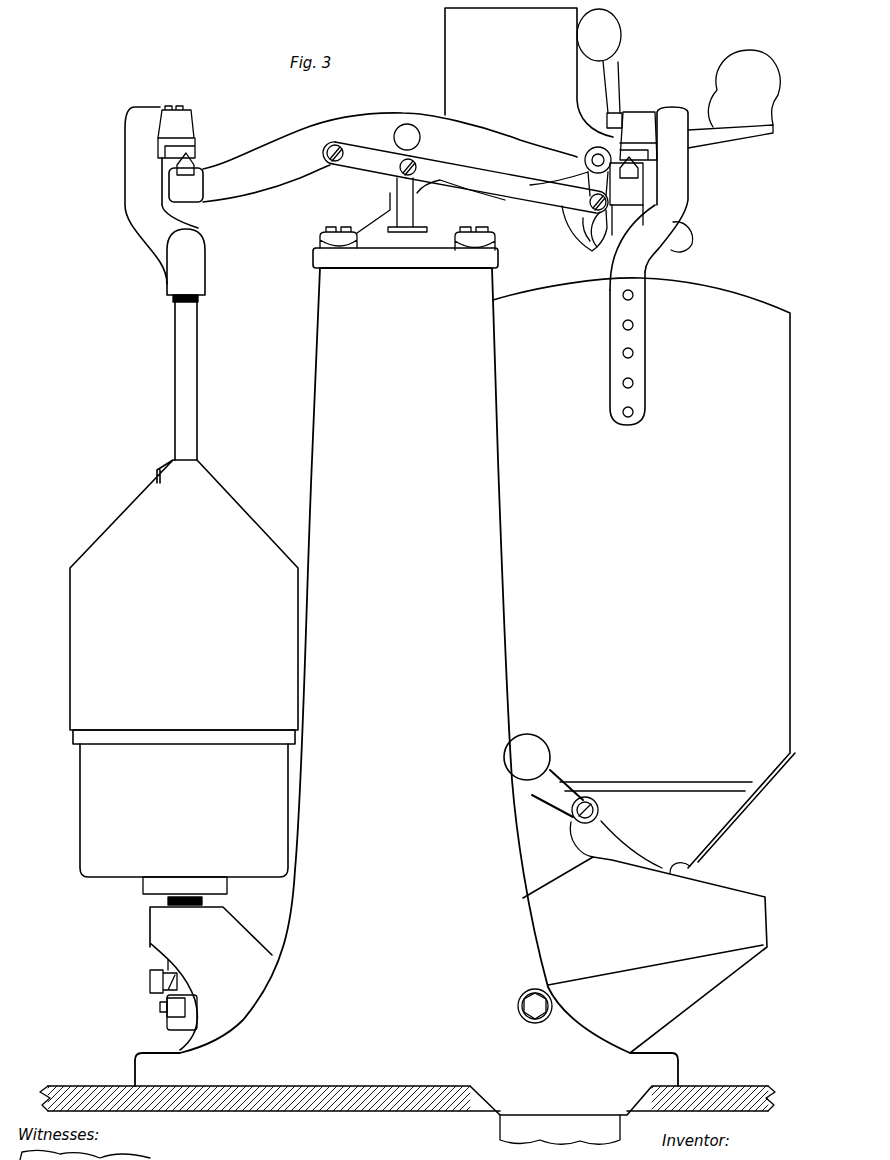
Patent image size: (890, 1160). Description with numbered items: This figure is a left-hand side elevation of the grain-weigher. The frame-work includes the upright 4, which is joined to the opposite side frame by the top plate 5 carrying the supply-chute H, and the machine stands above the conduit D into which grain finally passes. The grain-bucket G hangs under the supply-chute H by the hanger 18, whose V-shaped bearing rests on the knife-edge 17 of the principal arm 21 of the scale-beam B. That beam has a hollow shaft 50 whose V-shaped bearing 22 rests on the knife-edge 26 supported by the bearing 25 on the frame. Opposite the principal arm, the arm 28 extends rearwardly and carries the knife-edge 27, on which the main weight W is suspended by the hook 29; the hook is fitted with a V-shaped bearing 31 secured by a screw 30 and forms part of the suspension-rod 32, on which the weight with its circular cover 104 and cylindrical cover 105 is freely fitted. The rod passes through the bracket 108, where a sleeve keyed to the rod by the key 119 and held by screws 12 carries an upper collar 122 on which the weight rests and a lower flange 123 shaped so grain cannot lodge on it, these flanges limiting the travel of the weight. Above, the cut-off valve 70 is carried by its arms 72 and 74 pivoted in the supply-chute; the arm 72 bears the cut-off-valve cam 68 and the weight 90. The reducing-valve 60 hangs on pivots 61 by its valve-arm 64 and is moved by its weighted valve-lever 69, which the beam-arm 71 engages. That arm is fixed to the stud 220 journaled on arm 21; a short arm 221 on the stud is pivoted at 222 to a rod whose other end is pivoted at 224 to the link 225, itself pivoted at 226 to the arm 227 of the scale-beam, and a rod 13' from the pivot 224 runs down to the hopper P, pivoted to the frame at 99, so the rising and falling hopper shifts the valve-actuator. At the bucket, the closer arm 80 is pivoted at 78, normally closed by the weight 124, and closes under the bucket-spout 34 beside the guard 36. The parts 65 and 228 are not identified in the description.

The upright 4 is at (316, 412).
The top plate 5 is at (322, 256).
The screws 12 is at (160, 1006).
The rod 13' is at (460, 200).
The pivot or knife-edge 17 is at (645, 170).
The hanger 18 is at (612, 311).
The principal arm of scale-beam 21 is at (395, 157).
The V-shaped bearing 22 is at (415, 160).
The bearing 25 is at (392, 203).
The pivot or knife-edge 26 is at (396, 184).
The pivot or knife-edge 27 is at (190, 168).
The arm 28 is at (257, 168).
The hook 29 is at (128, 158).
The screw 30 is at (176, 108).
The V-shaped bearing 31 is at (180, 150).
The suspension-rod 32 is at (176, 360).
The bucket-spout 34 is at (663, 863).
The guard 36 is at (690, 869).
The hollow shaft 50 is at (413, 122).
The reducing-valve 60 is at (680, 242).
The pivots 61 is at (608, 127).
The valve-arm 64 is at (690, 215).
The block 65 is at (618, 230).
The cut-off-valve cam 68 is at (608, 118).
The valve-lever 69 is at (703, 118).
The cut-off valve 70 is at (582, 234).
The beam-arm 71 is at (737, 134).
The arm 72 is at (617, 82).
The arm 74 is at (575, 205).
The pivot 78 is at (587, 797).
The arm 80 is at (600, 840).
The weight 90 is at (599, 35).
The pivot 99 is at (530, 1004).
The circular cover 104 is at (82, 736).
The cylindrical cover 105 is at (78, 626).
The bracket 108 is at (211, 978).
The key 119 is at (170, 1012).
The flange or collar 122 is at (148, 887).
The flange 123 is at (152, 983).
The weight 124 is at (535, 740).
The stud 220 is at (588, 157).
The short arm 221 is at (585, 178).
The pivot 222 is at (590, 200).
The pivot 224 is at (418, 169).
The arm or link 225 is at (371, 160).
The pivot 226 is at (326, 158).
The arm 227 is at (370, 130).
The bar 228 is at (480, 183).
The scale-beam B is at (333, 113).
The supply-chute H is at (529, 72).
The grain-bucket G is at (644, 573).
The main weight W is at (184, 810).
The hopper P is at (645, 955).
The conduit D is at (407, 1115).